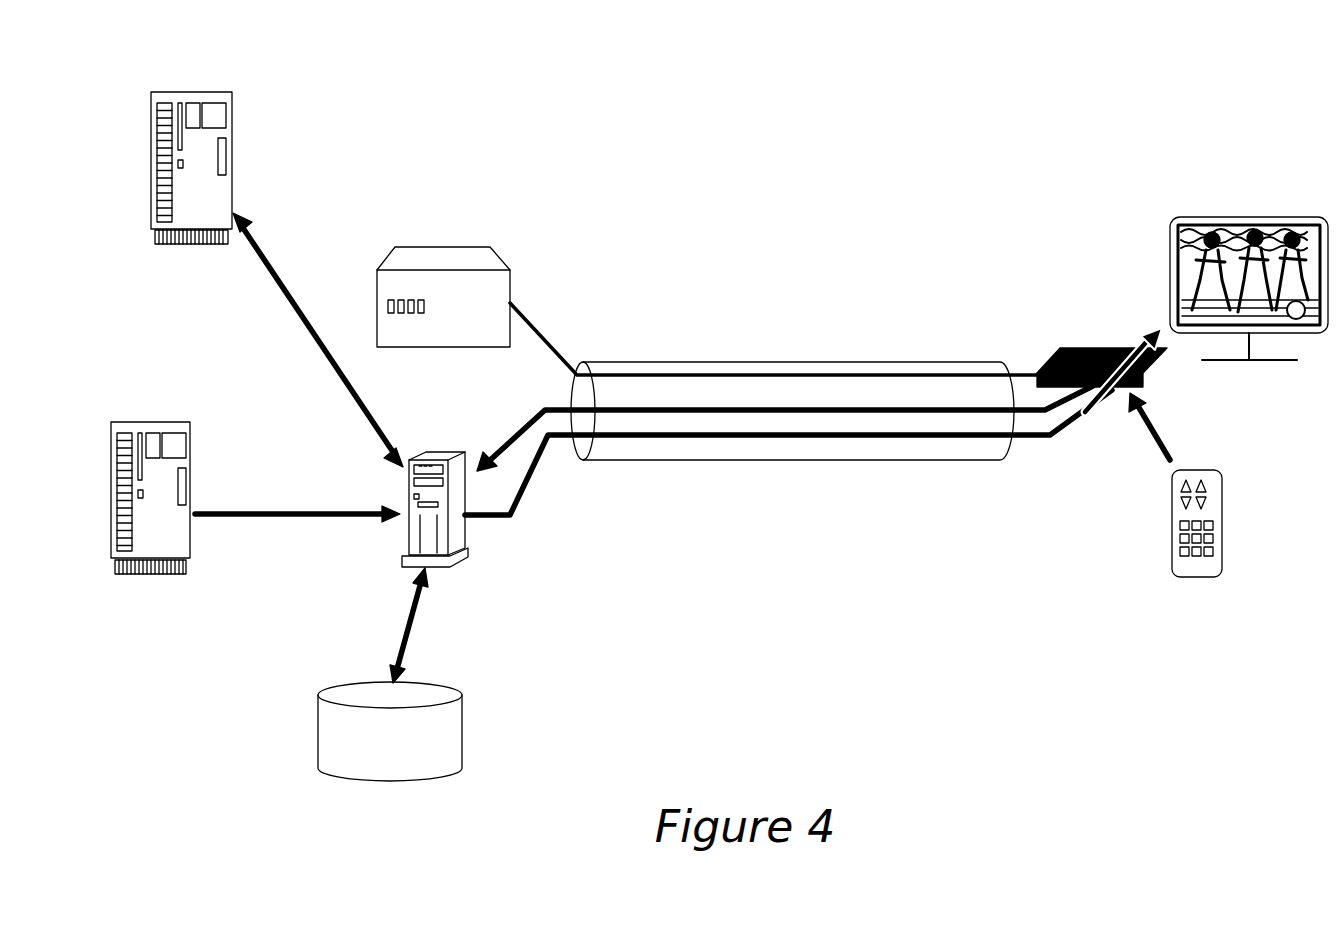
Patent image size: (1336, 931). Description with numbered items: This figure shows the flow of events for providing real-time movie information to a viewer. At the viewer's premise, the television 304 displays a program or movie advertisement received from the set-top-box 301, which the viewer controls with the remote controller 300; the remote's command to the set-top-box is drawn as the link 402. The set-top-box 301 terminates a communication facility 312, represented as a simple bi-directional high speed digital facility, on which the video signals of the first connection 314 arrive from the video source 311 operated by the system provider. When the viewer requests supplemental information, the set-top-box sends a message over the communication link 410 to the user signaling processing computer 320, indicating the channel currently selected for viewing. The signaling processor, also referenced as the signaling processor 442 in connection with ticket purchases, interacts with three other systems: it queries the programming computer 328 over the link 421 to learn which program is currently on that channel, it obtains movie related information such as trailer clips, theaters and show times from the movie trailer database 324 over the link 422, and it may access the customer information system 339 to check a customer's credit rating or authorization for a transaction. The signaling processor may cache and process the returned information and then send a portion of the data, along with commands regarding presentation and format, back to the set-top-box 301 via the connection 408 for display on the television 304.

The programming computer 328 is at (237, 170).
The movie trailer database 324 is at (190, 457).
The user signaling processing computer 320 is at (413, 565).
The communication link between programming computer and web server 421 is at (318, 345).
The communication link from movie trailer database to web server 422 is at (295, 517).
The signaling processor 442 is at (410, 624).
The customer information system (CIS) 339 is at (315, 757).
The video source 311 is at (510, 285).
The communication facility 312 is at (778, 360).
The first connection 314 is at (560, 350).
The communication link 410 is at (720, 414).
The connection 408 is at (825, 437).
The set-top-box 301 is at (1082, 345).
The television 304 is at (1170, 257).
The remote controller 300 is at (1222, 517).
The remote control signal 402 is at (1157, 448).